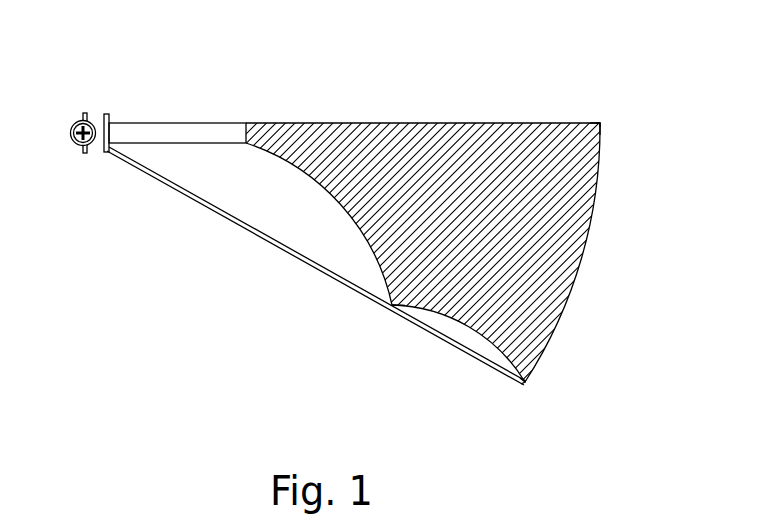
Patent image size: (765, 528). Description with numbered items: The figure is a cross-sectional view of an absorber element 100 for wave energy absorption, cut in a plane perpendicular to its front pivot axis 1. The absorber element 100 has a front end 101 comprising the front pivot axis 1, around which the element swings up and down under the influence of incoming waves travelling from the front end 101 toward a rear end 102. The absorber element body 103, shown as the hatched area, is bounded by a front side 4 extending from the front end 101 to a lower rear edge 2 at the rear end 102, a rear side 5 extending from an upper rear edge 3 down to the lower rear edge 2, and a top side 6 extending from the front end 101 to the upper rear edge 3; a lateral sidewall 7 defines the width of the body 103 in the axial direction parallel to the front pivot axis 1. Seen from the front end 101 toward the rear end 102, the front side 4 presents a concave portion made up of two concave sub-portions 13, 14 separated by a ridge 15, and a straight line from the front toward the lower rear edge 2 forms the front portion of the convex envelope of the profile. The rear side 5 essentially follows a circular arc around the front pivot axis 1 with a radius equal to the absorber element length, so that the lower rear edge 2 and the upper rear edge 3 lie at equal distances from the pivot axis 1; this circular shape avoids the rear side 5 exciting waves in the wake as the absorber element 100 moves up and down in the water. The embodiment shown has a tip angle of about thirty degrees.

The absorber element 100 is at (220, 76).
The front end 101 is at (100, 97).
The rear end 102 is at (582, 114).
The absorber element body 103 is at (456, 187).
The front pivot axis 1 is at (73, 146).
The lower rear edge 2 is at (527, 387).
The upper rear edge 3 is at (601, 123).
The front side 4 is at (303, 204).
The rear side 5 is at (585, 249).
The top side 6 is at (312, 122).
The lateral sidewall 7 is at (180, 178).
The concave sub-portion 13 is at (376, 256).
The concave sub-portion 14 is at (474, 333).
The ridge 15 is at (384, 307).